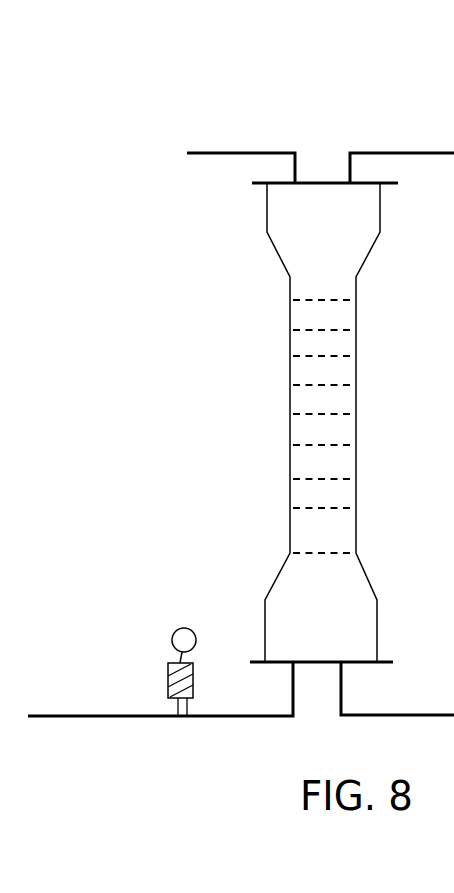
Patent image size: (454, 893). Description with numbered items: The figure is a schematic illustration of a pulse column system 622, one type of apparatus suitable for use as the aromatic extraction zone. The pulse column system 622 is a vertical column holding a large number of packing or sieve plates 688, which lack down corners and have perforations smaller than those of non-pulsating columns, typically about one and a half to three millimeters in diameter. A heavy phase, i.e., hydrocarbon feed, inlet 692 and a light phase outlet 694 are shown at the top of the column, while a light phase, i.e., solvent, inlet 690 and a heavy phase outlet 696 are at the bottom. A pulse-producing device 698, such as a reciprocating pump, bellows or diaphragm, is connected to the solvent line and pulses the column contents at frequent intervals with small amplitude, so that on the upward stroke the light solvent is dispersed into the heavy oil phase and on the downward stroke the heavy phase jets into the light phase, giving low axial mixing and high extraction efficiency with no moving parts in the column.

The pulse column system 622 is at (140, 93).
The packing or sieve plates 688 is at (307, 325).
The light phase inlet 690 is at (160, 709).
The heavy phase inlet 692 is at (241, 149).
The light phase outlet 694 is at (402, 149).
The heavy phase outlet 696 is at (397, 710).
The pulse-producing device 698 is at (175, 675).